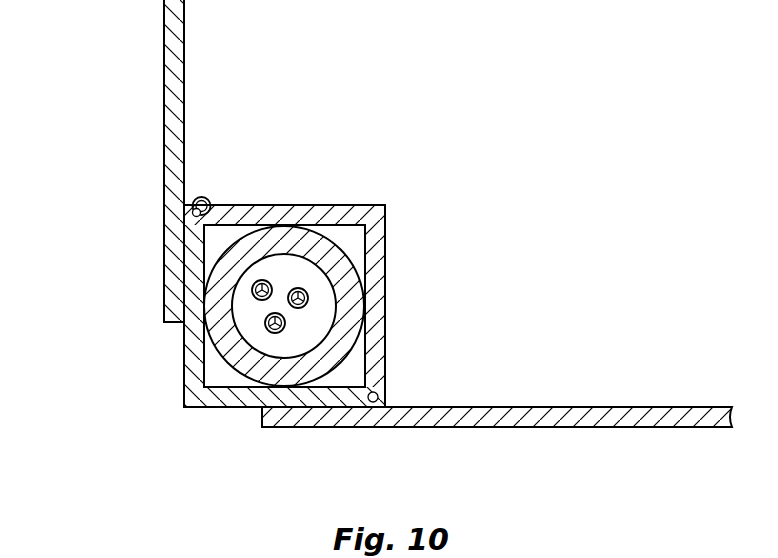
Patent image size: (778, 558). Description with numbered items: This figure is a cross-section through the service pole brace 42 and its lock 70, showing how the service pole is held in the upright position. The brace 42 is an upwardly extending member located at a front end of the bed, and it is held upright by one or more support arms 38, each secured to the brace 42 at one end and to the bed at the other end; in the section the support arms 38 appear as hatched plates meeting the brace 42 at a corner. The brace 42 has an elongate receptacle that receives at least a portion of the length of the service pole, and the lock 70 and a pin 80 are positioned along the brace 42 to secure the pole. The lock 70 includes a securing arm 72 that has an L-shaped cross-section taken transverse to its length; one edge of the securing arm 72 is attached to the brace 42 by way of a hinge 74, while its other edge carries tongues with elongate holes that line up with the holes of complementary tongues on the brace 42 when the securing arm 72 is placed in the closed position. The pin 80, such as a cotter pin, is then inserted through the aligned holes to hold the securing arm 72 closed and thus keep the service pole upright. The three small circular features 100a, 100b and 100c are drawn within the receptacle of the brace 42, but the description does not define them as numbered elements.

The support arm 38 is at (174, 75).
The service pole brace 42 is at (190, 382).
The lock 70 is at (366, 101).
The securing arm 72 is at (373, 248).
The hinge 74 is at (385, 391).
The pin 80 is at (215, 200).
The contact pin 100a is at (252, 288).
The contact pin 100b is at (270, 332).
The contact pin 100c is at (305, 305).